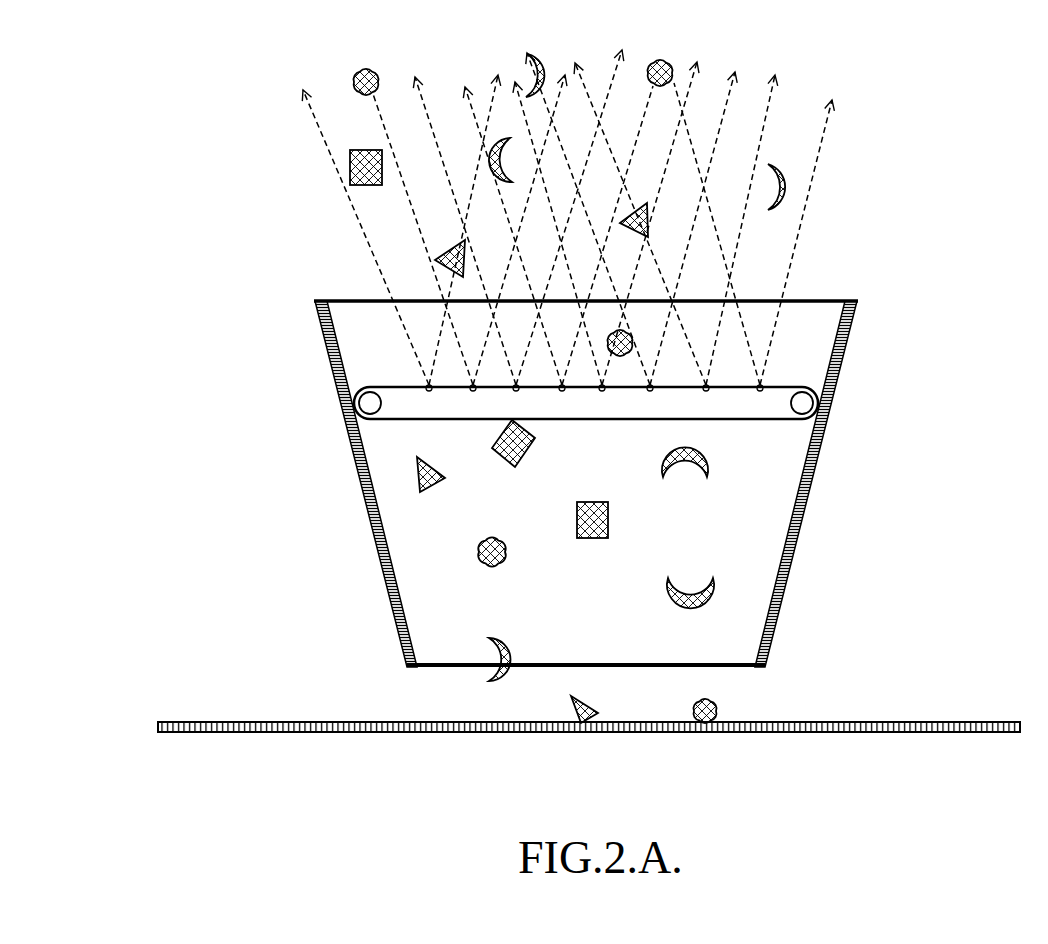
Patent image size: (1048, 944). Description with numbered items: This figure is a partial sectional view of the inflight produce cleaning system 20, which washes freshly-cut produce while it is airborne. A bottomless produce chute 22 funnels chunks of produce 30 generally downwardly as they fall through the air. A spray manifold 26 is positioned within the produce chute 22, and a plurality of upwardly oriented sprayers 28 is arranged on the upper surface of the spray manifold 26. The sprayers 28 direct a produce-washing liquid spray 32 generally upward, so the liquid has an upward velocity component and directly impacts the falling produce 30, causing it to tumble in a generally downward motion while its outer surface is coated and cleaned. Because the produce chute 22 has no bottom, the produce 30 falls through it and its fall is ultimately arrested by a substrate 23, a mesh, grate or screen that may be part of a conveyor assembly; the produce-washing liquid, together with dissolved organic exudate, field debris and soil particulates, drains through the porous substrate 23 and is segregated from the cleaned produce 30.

The inflight produce cleaning system 20 is at (152, 337).
The produce chute 22 is at (398, 636).
The substrate 23 is at (324, 722).
The spray manifold 26 is at (738, 419).
The sprayers 28 is at (763, 386).
The produce 30 is at (350, 166).
The produce-washing liquid spray 32 is at (373, 258).